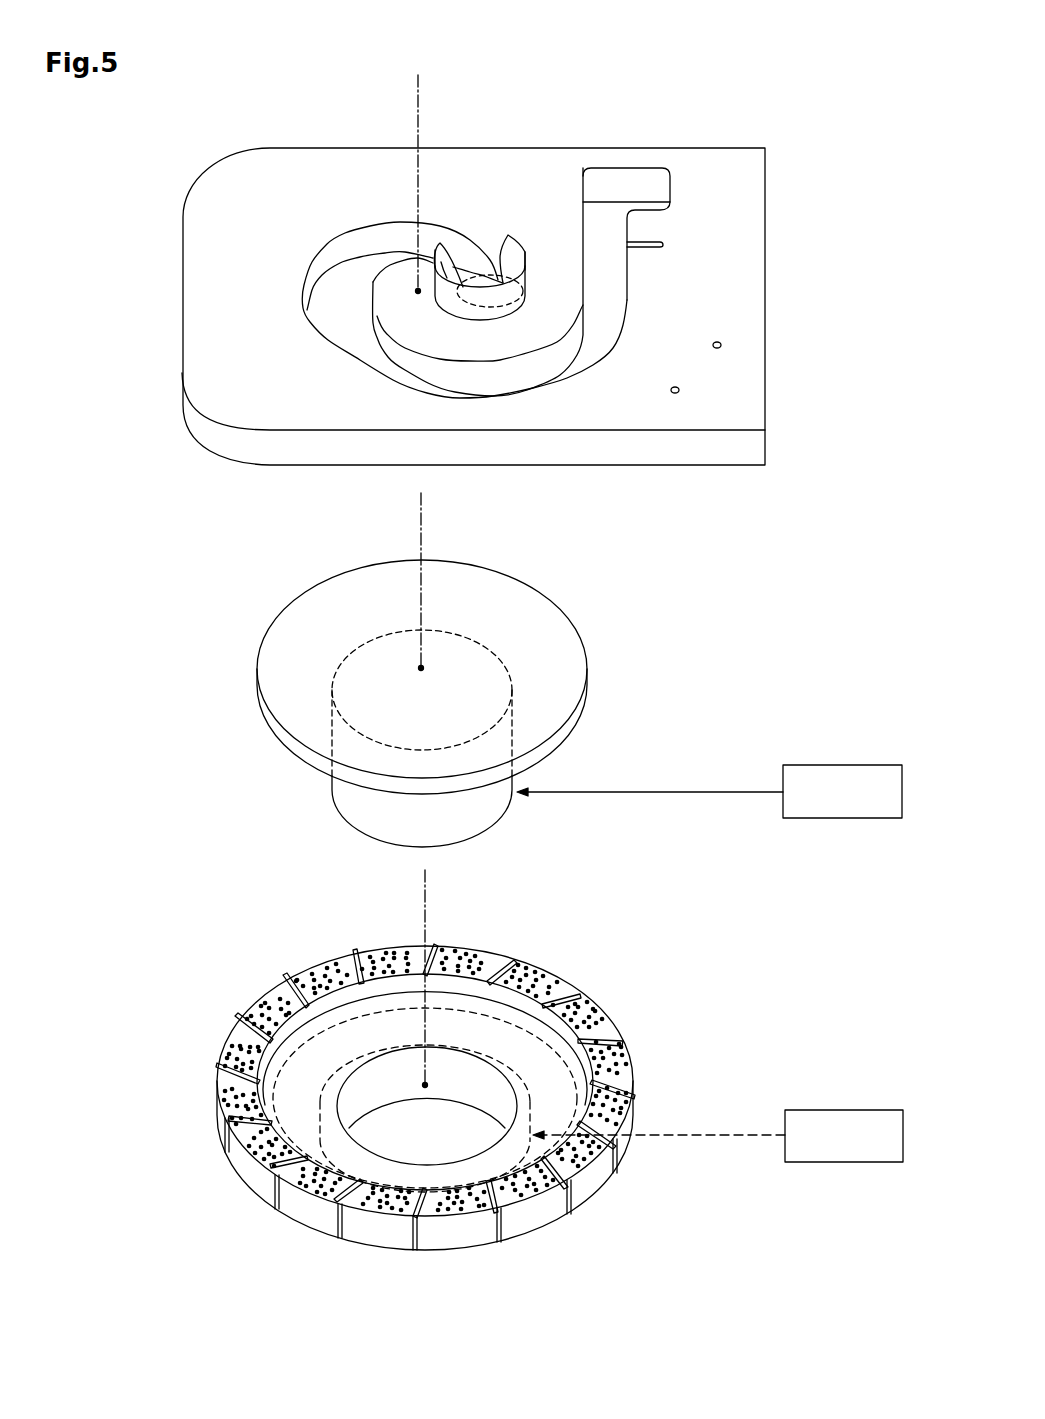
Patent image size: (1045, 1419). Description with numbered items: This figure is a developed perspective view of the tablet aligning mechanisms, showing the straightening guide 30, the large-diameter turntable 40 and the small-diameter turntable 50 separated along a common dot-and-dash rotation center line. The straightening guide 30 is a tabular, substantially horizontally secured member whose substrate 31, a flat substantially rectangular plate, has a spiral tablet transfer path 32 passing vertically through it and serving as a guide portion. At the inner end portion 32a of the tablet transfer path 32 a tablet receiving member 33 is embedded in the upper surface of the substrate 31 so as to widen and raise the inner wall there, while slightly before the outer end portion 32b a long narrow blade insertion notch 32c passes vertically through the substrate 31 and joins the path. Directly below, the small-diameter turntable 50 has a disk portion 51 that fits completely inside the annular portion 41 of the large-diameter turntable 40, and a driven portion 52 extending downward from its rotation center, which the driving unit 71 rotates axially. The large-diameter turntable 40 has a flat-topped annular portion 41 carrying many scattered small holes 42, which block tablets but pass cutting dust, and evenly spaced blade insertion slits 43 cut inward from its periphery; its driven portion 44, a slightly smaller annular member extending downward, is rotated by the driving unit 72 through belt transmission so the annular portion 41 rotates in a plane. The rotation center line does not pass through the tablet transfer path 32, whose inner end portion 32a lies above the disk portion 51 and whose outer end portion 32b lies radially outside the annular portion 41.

The straightening guide 30 is at (188, 158).
The substrate 31 is at (301, 148).
The tablet transfer path 32 is at (350, 332).
The inner end portion 32a is at (472, 278).
The outer end portion 32b is at (607, 217).
The blade insertion notch 32c is at (657, 241).
The tablet receiving member 33 is at (520, 282).
The large-diameter turntable 40 is at (210, 1022).
The annular portion 41 is at (548, 967).
The small holes 42 is at (606, 1023).
The blade insertion slits 43 is at (625, 1093).
The driven portion 44 is at (545, 1152).
The small-diameter turntable 50 is at (237, 667).
The disk portion 51 is at (590, 667).
The driven portion 52 is at (512, 803).
The driving unit 71 is at (832, 765).
The driving unit 72 is at (835, 1110).